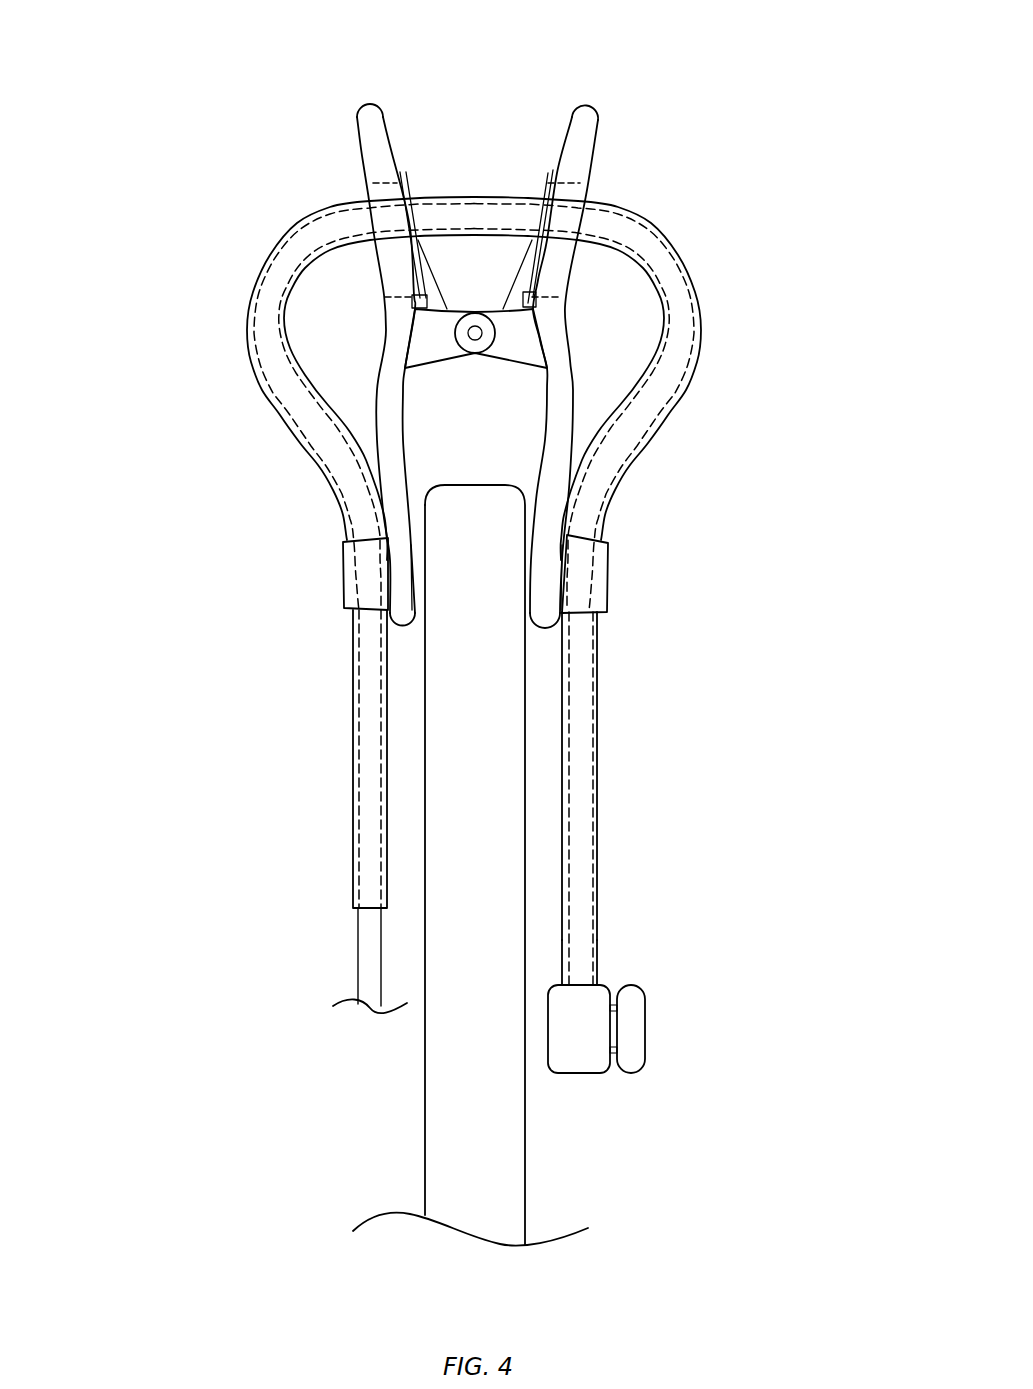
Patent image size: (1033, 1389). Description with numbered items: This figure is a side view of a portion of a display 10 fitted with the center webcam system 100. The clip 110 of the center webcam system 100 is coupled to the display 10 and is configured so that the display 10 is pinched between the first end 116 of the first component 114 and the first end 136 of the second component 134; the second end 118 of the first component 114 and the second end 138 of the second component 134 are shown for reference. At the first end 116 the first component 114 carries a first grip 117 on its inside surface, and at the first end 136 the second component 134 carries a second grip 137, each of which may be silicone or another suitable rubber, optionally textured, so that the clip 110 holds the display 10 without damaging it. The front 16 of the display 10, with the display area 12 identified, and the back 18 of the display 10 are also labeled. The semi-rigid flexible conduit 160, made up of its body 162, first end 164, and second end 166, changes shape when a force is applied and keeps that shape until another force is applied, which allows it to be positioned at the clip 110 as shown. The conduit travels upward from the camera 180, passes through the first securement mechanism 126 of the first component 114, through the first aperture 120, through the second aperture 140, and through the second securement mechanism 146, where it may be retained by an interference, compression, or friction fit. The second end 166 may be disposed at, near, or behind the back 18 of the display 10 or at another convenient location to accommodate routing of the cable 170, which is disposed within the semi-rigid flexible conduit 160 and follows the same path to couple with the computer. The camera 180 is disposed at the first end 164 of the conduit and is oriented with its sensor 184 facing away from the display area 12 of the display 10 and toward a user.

The display 10 is at (310, 1083).
The display area 12 is at (525, 1124).
The front 16 is at (525, 1182).
The back 18 is at (424, 1140).
The center webcam system 100 is at (167, 75).
The clip 110 is at (217, 175).
The first component 114 is at (568, 328).
The first end 116 is at (545, 632).
The first grip 117 is at (528, 540).
The second end 118 is at (590, 106).
The first aperture 120 is at (562, 180).
The first securement mechanism 126 is at (608, 592).
The second component 134 is at (388, 326).
The first end 136 is at (403, 632).
The second grip 137 is at (413, 540).
The second end 138 is at (371, 106).
The second aperture 140 is at (385, 183).
The second securement mechanism 146 is at (342, 590).
The semi-rigid flexible conduit 160 is at (598, 752).
The body 162 is at (702, 290).
The first end 164 is at (598, 975).
The second end 166 is at (355, 905).
The cable 170 is at (598, 832).
The camera 180 is at (645, 995).
The sensor 184 is at (645, 1030).